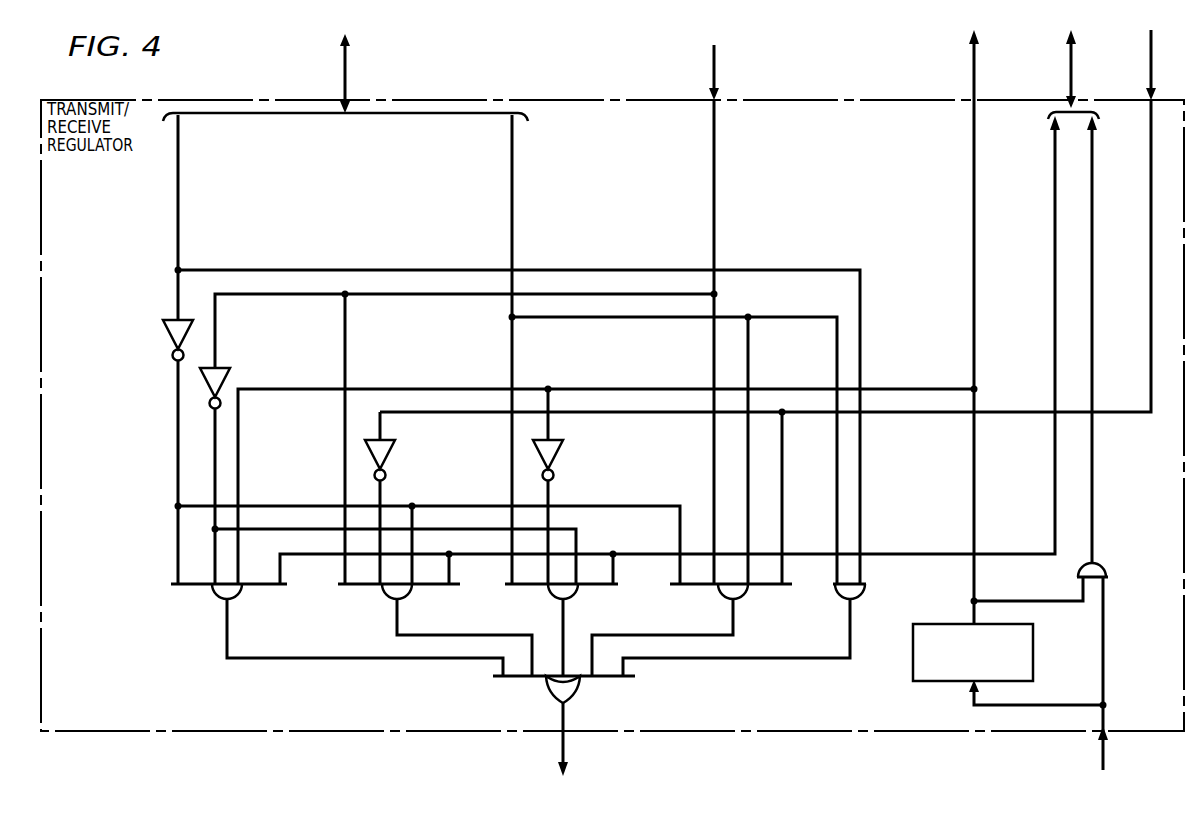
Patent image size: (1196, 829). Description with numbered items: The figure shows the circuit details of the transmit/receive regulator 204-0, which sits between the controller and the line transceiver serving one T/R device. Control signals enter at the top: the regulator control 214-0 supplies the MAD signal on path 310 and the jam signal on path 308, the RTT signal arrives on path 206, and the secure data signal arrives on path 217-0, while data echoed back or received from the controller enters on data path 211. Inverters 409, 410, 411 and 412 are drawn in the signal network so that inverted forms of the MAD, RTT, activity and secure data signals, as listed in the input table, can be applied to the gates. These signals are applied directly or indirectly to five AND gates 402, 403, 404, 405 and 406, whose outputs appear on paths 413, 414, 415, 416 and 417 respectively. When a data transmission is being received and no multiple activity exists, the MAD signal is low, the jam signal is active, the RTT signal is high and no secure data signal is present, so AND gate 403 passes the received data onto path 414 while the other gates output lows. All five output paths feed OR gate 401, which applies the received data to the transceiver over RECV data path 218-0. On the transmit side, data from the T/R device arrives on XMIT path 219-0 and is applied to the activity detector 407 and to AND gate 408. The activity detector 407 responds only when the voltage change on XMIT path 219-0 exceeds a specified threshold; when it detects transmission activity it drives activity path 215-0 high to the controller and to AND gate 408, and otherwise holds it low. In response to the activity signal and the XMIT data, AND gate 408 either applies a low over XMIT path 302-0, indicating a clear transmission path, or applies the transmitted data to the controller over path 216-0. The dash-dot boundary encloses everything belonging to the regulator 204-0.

The regulator 204-0 is at (176, 99).
The regulator control 214-0 is at (348, 63).
The RTT signal path 206 is at (711, 70).
The activity path 215-0 is at (971, 70).
The data path to controller 216-0 is at (1068, 62).
The secure data signal path 217-0 is at (1149, 68).
The MAD signal path 310 is at (180, 150).
The jam signal path 308 is at (510, 158).
The data path 211 is at (1053, 166).
The XMIT path 302-0 is at (1094, 160).
The RECV data path 218-0 is at (566, 748).
The XMIT path 219-0 is at (1100, 756).
The OR gate 401 is at (548, 686).
The AND gate 402 is at (240, 596).
The AND gate 403 is at (410, 596).
The AND gate 404 is at (576, 596).
The AND gate 405 is at (748, 596).
The AND gate 406 is at (862, 590).
The activity detector 407 is at (1036, 660).
The AND gate 408 is at (1108, 572).
The inverter 409 is at (170, 340).
The inverter 410 is at (228, 375).
The inverter 411 is at (392, 450).
The inverter 412 is at (560, 452).
The output path 413 is at (226, 644).
The output path 414 is at (396, 626).
The output path 415 is at (562, 620).
The output path 416 is at (732, 620).
The output path 417 is at (849, 644).